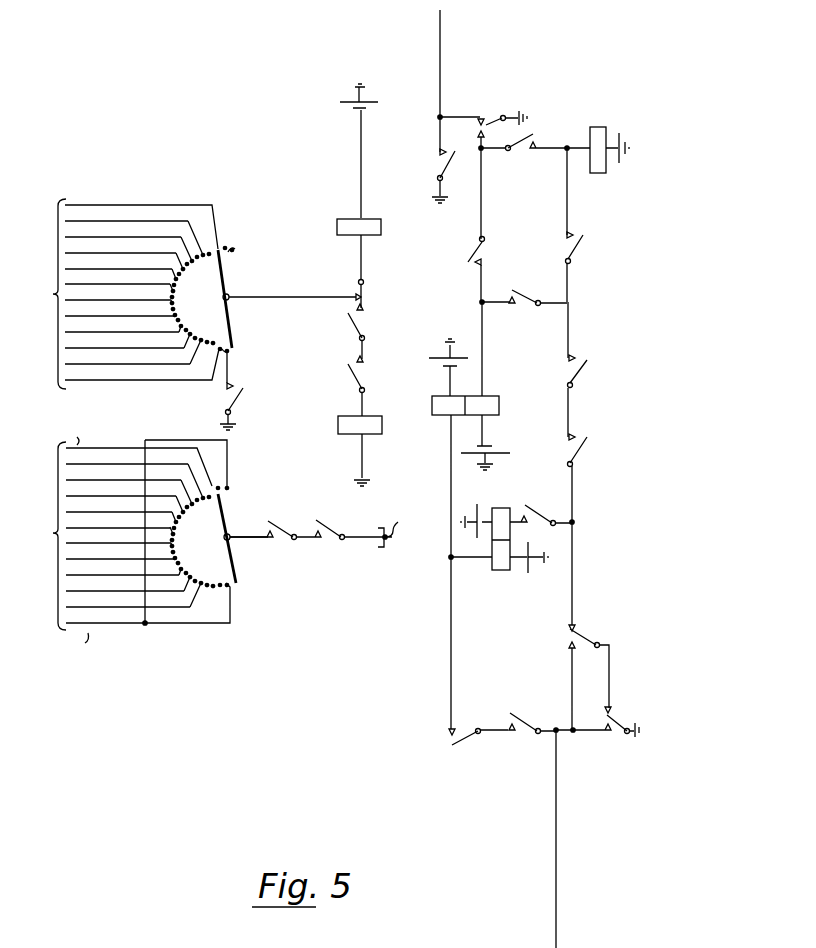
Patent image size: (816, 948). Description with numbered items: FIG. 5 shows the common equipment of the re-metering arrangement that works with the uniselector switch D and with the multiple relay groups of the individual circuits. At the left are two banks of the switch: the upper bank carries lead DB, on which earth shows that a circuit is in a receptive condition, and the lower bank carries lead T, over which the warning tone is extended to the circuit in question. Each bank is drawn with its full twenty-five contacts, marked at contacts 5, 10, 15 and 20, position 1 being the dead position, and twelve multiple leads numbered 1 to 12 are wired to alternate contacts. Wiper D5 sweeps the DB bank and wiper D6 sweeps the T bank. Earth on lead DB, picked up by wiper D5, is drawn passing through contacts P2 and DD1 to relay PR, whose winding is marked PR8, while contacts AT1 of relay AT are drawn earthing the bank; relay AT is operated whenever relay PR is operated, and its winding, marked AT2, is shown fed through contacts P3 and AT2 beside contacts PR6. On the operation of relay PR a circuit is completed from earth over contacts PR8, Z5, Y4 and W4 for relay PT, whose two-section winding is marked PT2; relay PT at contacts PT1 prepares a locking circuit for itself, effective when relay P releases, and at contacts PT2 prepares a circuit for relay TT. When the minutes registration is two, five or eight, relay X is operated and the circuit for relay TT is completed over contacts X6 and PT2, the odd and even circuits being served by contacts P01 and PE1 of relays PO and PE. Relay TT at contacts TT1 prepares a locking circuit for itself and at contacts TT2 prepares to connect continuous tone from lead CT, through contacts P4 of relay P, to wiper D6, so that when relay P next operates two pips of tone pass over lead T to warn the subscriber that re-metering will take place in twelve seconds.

The lead DB is at (133, 294).
The lead T is at (131, 539).
The contact position 1 is at (71, 191).
The selector contact 12 / line 12 is at (86, 390).
The contact position 5 is at (209, 263).
The selector contact position 10 is at (191, 279).
The selector contact position 15 is at (191, 315).
The selector contact position 20 is at (212, 334).
The wiper D5 is at (281, 299).
The selector wiper D6 is at (235, 538).
The relay contact AT1 is at (243, 406).
The relay DD1 winding and contact DD1 is at (408, 228).
The relay contact P2 is at (345, 331).
The contacts PR8 is at (408, 430).
The relay contact PR6 is at (455, 176).
The relay contact P3 is at (483, 122).
The relay AT2 winding and contact AT2 is at (610, 107).
The contacts PT1 is at (492, 252).
The relay contact Y4 is at (584, 248).
The contacts W4 is at (524, 308).
The contacts Z5 is at (586, 371).
The contacts PT2 is at (527, 409).
The contacts TT2 is at (510, 592).
The contacts TT1 is at (541, 509).
The relay contact P4 is at (340, 523).
The lead CT is at (395, 527).
The contacts PO1 P01 is at (593, 674).
The contacts X6 is at (518, 721).
The relay contact PE1 is at (597, 735).